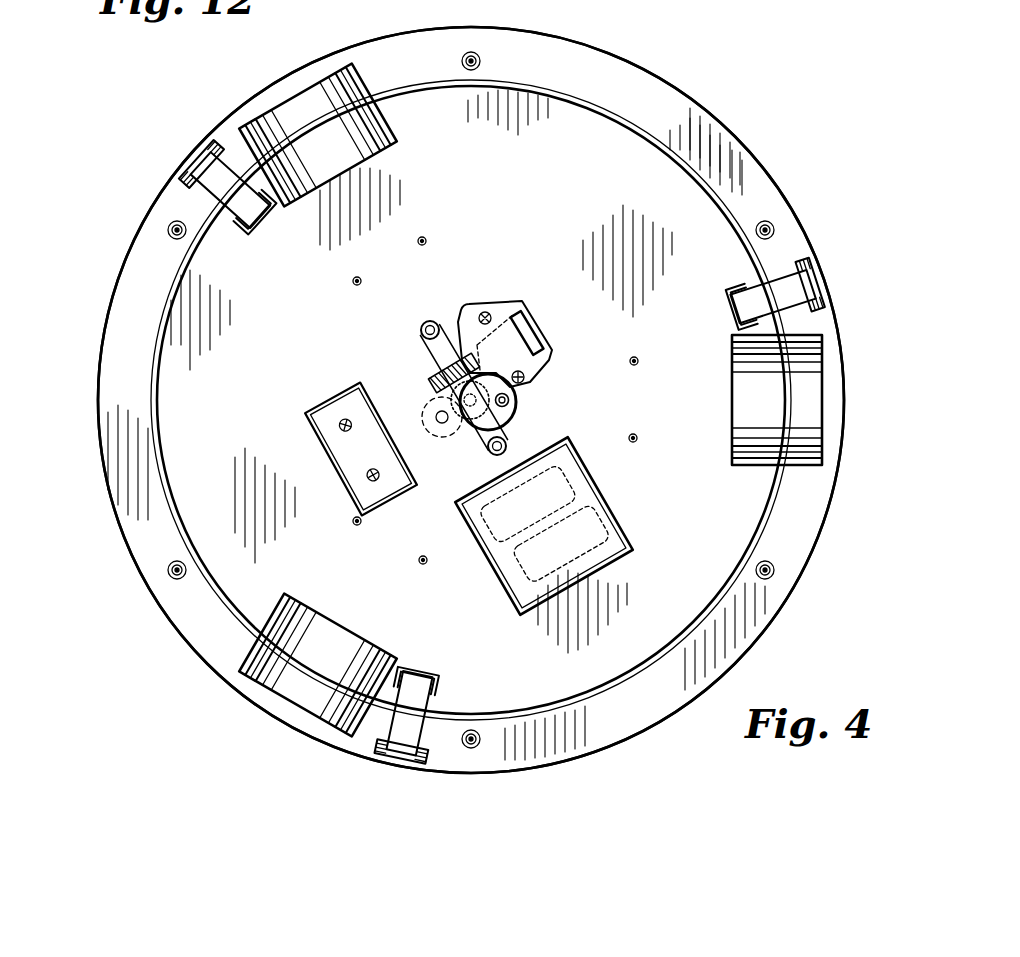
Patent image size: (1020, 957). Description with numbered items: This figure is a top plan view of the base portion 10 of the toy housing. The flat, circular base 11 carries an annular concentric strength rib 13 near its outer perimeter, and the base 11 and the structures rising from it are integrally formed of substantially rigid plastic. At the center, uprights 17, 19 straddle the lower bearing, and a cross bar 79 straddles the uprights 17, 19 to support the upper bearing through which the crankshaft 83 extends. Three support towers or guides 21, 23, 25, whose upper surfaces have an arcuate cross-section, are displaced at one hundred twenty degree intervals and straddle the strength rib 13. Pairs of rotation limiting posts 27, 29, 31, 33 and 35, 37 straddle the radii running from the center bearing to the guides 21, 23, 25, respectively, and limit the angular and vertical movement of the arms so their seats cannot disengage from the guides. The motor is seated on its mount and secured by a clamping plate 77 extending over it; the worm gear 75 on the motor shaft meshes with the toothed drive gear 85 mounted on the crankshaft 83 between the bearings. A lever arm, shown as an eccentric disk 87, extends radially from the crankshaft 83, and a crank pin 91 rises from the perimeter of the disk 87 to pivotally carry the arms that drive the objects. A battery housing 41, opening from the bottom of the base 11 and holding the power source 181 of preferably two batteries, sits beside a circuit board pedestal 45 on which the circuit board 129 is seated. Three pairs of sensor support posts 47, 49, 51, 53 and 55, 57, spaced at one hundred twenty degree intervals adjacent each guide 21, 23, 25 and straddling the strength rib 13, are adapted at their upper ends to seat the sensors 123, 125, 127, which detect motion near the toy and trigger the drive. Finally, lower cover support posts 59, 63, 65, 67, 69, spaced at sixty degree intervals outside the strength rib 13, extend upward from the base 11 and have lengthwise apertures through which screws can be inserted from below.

The base portion 10 is at (118, 256).
The base 11 is at (703, 107).
The strength rib 13 is at (593, 105).
The upright 17 is at (421, 327).
The upright 19 is at (500, 438).
The support tower or guide 21 is at (790, 391).
The support tower or guide 23 is at (318, 107).
The support tower or guide 25 is at (313, 690).
The rotation limiting post 27 is at (637, 443).
The rotation limiting post 29 is at (638, 358).
The rotation limiting post 31 is at (425, 237).
The rotation limiting post 33 is at (352, 280).
The rotation limiting post 35 is at (352, 524).
The rotation limiting post 37 is at (423, 566).
The battery housing 41 is at (630, 526).
The circuit board pedestal 45 is at (316, 427).
The sensor support post 47 is at (802, 258).
The sensor support post 49 is at (724, 292).
The sensor support post 51 is at (208, 154).
The sensor support post 53 is at (258, 236).
The sensor support post 55 is at (393, 750).
The sensor support post 57 is at (418, 670).
The lower cover support post 59 is at (771, 224).
The lower cover support post 63 is at (169, 227).
The lower cover support post 65 is at (170, 575).
The lower cover support post 67 is at (478, 733).
The lower cover support post 69 is at (773, 572).
The worm gear 75 is at (436, 378).
The clamping plate 77 is at (498, 300).
The cross bar 79 is at (426, 354).
The crankshaft 83 is at (456, 398).
The toothed drive gear 85 is at (460, 428).
The eccentric disk 87 is at (518, 406).
The crank pin 91 is at (504, 396).
The sensor 123 is at (805, 283).
The sensor 125 is at (205, 180).
The sensor 127 is at (440, 690).
The circuit board 129 is at (373, 482).
The power source 181 is at (583, 498).